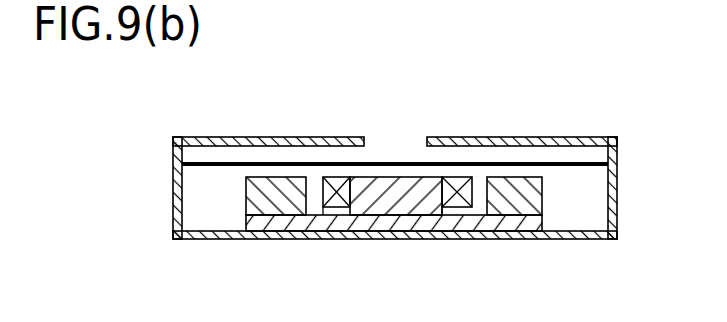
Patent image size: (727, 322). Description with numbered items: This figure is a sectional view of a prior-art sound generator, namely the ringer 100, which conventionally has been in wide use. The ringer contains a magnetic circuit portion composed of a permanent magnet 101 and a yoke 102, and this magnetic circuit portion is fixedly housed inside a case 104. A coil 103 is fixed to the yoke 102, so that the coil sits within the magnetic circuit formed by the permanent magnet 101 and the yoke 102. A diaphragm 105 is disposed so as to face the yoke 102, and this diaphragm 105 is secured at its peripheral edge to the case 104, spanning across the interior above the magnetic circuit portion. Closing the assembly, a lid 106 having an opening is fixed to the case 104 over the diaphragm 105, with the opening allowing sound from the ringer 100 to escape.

The ringer 100 is at (275, 130).
The permanent magnet 101 is at (537, 203).
The yoke 102 is at (400, 203).
The coil 103 is at (456, 207).
The case 104 is at (306, 233).
The diaphragm 105 is at (584, 167).
The lid 106 is at (558, 137).